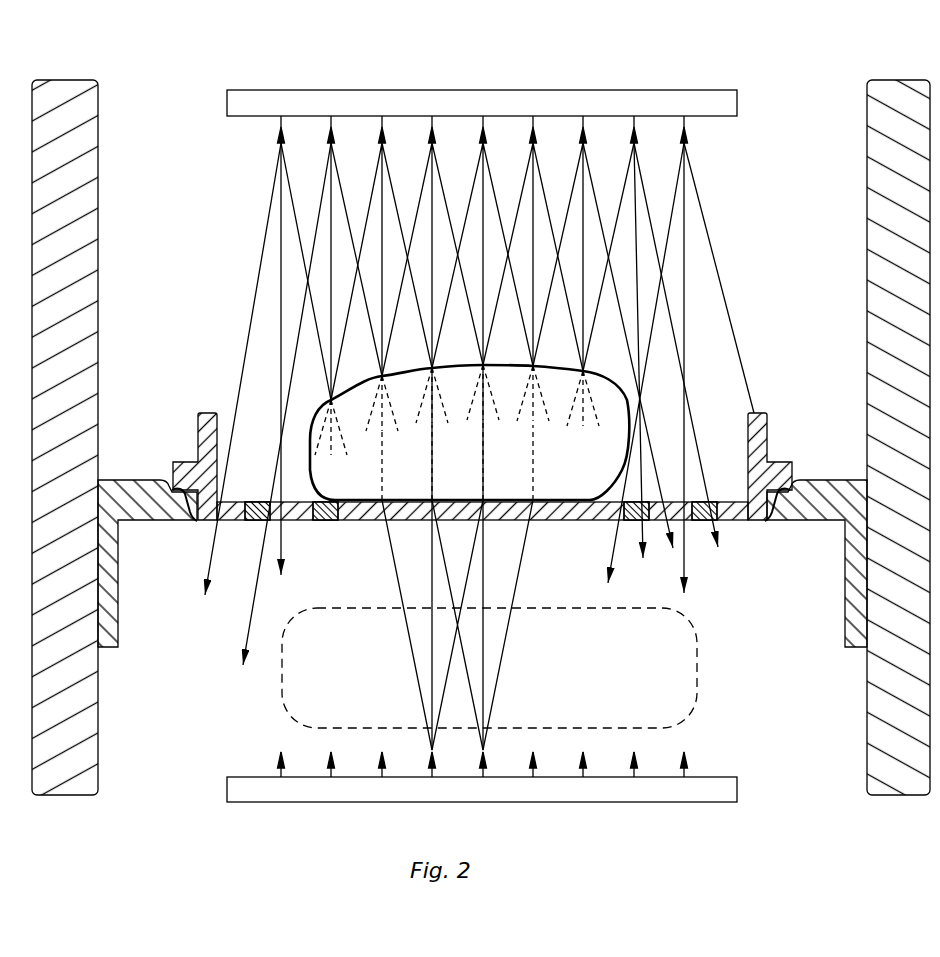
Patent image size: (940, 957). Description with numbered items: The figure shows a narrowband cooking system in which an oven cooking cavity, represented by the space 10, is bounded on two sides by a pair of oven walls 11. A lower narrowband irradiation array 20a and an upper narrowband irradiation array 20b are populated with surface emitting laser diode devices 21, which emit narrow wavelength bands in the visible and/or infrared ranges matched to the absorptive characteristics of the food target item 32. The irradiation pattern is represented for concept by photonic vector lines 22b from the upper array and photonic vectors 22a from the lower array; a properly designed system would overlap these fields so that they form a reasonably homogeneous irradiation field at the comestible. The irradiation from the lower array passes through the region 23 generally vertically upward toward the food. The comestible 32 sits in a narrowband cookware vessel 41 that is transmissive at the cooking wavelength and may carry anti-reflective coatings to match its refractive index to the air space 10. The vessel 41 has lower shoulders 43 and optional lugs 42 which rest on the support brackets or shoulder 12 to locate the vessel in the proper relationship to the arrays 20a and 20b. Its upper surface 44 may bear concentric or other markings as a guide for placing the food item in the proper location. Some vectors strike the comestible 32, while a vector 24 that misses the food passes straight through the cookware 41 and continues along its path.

The oven cooking cavity 10 is at (186, 214).
The oven walls 11 is at (98, 720).
The support brackets or shoulder 12 is at (140, 478).
The lower narrowband irradiation array 20a is at (663, 796).
The upper narrowband irradiation array 20b is at (703, 107).
The surface emitting laser diode devices 21 is at (428, 136).
The photonic vectors 22a is at (433, 658).
The photonic vector lines 22b is at (597, 203).
The region 23 is at (698, 670).
The vector 24 is at (687, 558).
The food target item 32 is at (607, 373).
The narrowband cookware vessel 41 is at (194, 420).
The lugs 42 is at (785, 463).
The lower shoulders of the vessel 43 is at (200, 522).
The upper surface 44 is at (257, 500).